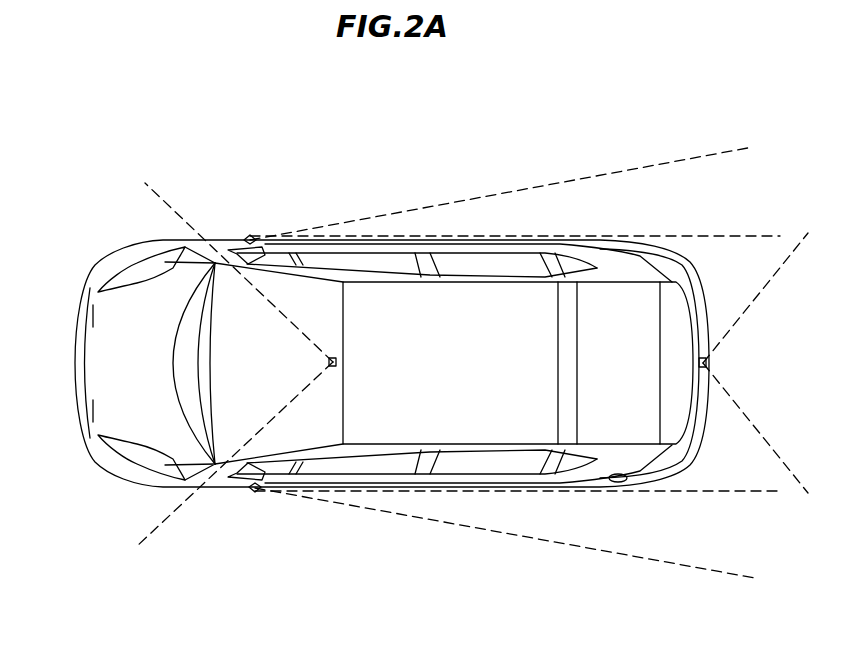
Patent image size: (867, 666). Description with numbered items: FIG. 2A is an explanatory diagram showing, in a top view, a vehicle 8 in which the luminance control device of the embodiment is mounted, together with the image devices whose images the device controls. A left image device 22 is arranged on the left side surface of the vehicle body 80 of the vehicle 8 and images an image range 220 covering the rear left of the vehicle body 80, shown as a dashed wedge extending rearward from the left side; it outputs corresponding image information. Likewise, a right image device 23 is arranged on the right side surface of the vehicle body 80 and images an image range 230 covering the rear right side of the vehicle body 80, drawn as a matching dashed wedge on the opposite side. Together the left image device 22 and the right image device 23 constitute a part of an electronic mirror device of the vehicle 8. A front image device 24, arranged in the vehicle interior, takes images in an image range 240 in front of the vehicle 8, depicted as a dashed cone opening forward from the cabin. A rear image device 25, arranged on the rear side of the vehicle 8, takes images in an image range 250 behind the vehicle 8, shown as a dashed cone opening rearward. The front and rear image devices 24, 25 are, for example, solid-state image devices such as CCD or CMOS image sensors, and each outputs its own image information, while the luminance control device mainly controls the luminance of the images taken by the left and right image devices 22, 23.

The vehicle 8 is at (725, 108).
The left image device 22 is at (252, 488).
The right image device 23 is at (250, 242).
The front image device 24 is at (333, 365).
The rear image device 25 is at (703, 365).
The vehicle body 80 is at (388, 415).
The image range 220 is at (598, 552).
The image range 230 is at (613, 173).
The image range 240 is at (170, 523).
The image range 250 is at (757, 290).